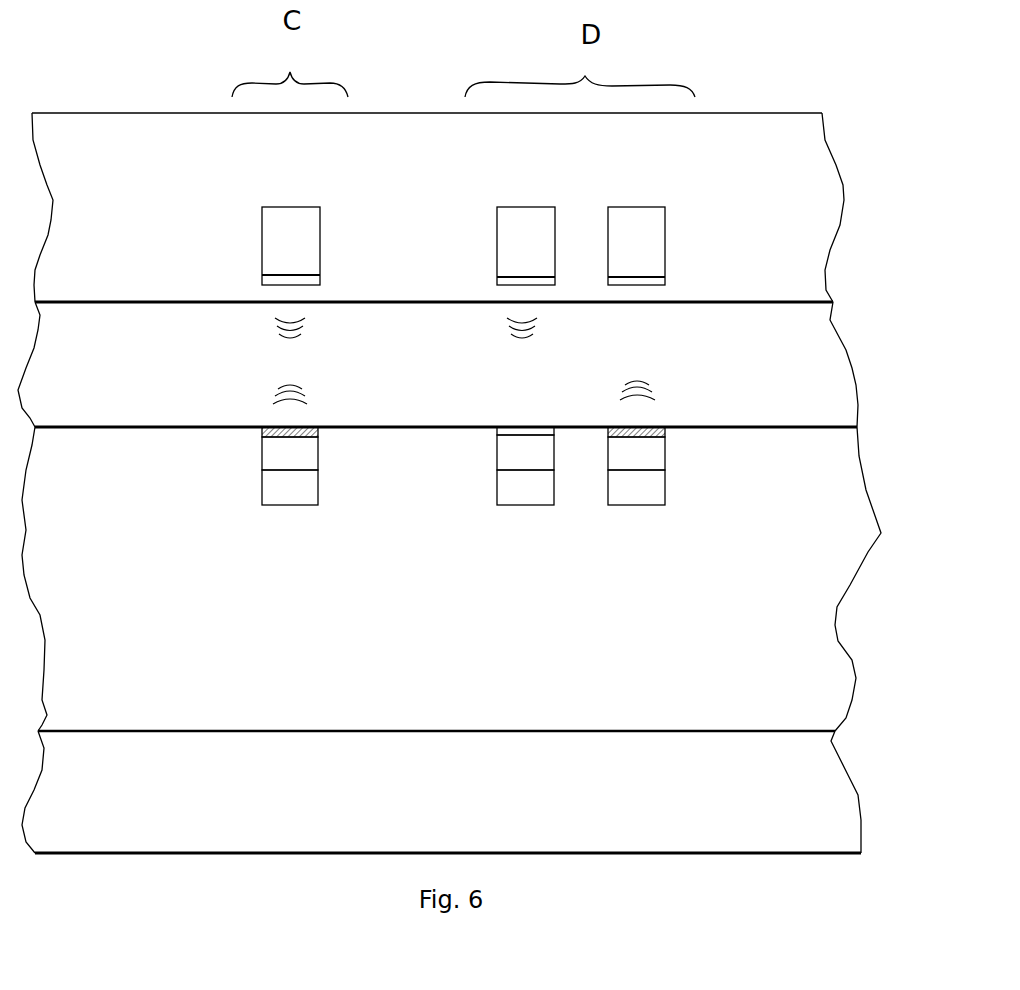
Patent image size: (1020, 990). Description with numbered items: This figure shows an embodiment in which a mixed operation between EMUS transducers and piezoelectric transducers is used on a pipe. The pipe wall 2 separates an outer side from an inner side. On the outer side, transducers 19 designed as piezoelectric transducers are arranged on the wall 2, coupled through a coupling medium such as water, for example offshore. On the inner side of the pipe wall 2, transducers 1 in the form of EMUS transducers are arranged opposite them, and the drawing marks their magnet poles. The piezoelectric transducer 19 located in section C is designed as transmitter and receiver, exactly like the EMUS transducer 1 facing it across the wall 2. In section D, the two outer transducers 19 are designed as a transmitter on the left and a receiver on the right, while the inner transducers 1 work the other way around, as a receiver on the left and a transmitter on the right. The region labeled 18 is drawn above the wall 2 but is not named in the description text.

The transducer 1 is at (262, 433).
The wall 2 is at (822, 372).
The housing 18 is at (800, 205).
The transducer 19 is at (268, 258).